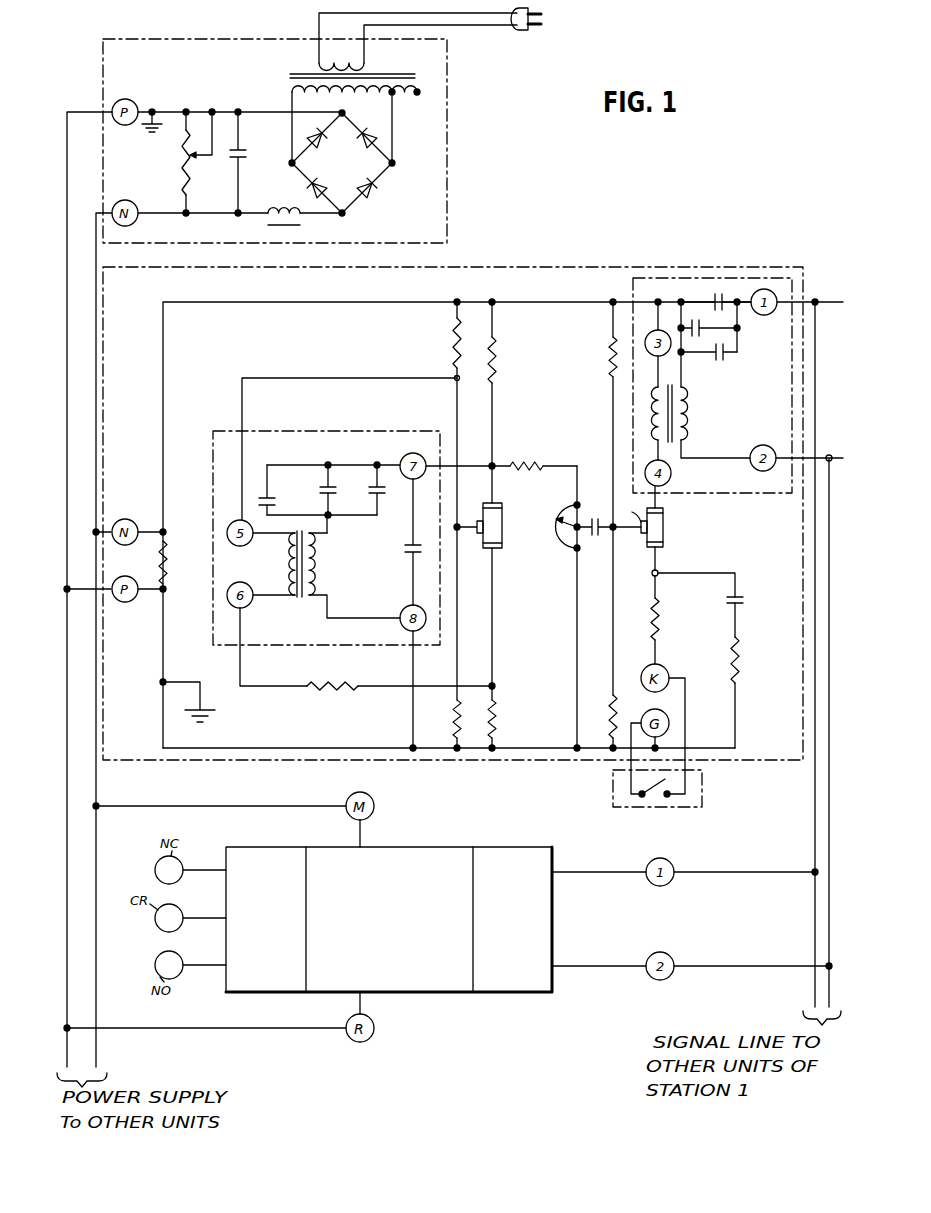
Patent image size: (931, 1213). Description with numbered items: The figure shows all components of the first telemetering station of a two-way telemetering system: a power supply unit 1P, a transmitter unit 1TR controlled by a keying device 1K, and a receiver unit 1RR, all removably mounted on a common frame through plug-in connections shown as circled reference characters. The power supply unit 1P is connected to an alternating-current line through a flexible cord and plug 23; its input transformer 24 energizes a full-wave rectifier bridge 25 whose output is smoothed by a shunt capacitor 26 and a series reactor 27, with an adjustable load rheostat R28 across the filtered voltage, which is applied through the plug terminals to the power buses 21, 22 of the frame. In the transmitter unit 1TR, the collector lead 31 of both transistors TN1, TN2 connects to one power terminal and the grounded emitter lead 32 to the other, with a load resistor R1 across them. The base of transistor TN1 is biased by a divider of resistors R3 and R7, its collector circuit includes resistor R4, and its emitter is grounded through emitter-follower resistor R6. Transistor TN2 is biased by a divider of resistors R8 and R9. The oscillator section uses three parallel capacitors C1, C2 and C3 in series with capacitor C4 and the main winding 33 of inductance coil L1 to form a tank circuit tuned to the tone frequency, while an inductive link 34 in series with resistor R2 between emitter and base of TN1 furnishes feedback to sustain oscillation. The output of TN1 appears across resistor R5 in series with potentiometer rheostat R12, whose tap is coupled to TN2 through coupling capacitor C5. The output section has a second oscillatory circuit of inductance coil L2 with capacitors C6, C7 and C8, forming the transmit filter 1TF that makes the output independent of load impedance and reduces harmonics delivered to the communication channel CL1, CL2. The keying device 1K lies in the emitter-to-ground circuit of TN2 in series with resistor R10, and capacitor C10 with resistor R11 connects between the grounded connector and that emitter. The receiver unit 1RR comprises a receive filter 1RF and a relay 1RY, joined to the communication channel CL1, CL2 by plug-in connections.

The power bus 21 is at (67, 112).
The power bus 22 is at (106, 296).
The plug 23 is at (525, 28).
The input transformer 24 is at (293, 73).
The full-wave rectifier bridge 25 is at (382, 168).
The shunt capacitor 26 is at (249, 162).
The series reactor 27 is at (306, 218).
The adjustable load rheostat R28 is at (183, 149).
The power supply unit 1P is at (465, 70).
The transmitter unit 1TR is at (614, 265).
The transmit filter 1TF is at (365, 431).
The collector lead 31 is at (225, 302).
The emitter lead 32 is at (303, 748).
The main winding 33 is at (322, 570).
The inductive link 34 is at (284, 563).
The inductance coil L1 is at (302, 598).
The inductance coil L2 is at (669, 403).
The capacitor C1 is at (319, 487).
The capacitor C2 is at (368, 493).
The capacitor C3 is at (265, 489).
The capacitor C4 is at (408, 560).
The coupling capacitor C5 is at (597, 537).
The capacitor C6 is at (738, 330).
The capacitor C7 is at (716, 296).
The capacitor C8 is at (718, 360).
The capacitor C10 is at (753, 601).
The load resistor R1 is at (158, 558).
The resistor R2 is at (332, 673).
The resistor R3 is at (454, 340).
The resistor R4 is at (498, 348).
The resistor R5 is at (530, 462).
The emitter-follower resistor R6 is at (497, 720).
The resistor R7 is at (452, 720).
The resistor R8 is at (608, 353).
The resistor R9 is at (610, 720).
The resistor R10 is at (653, 616).
The resistor R11 is at (738, 656).
The potentiometer rheostat R12 is at (559, 520).
The transistor TN1 is at (484, 553).
The transistor TN2 is at (668, 528).
The keying device 1K is at (702, 781).
The receiver unit 1RR is at (394, 922).
The relay 1RY is at (286, 847).
The receive filter 1RF is at (523, 843).
The communication channel CL1 is at (830, 294).
The communication channel CL2 is at (838, 448).